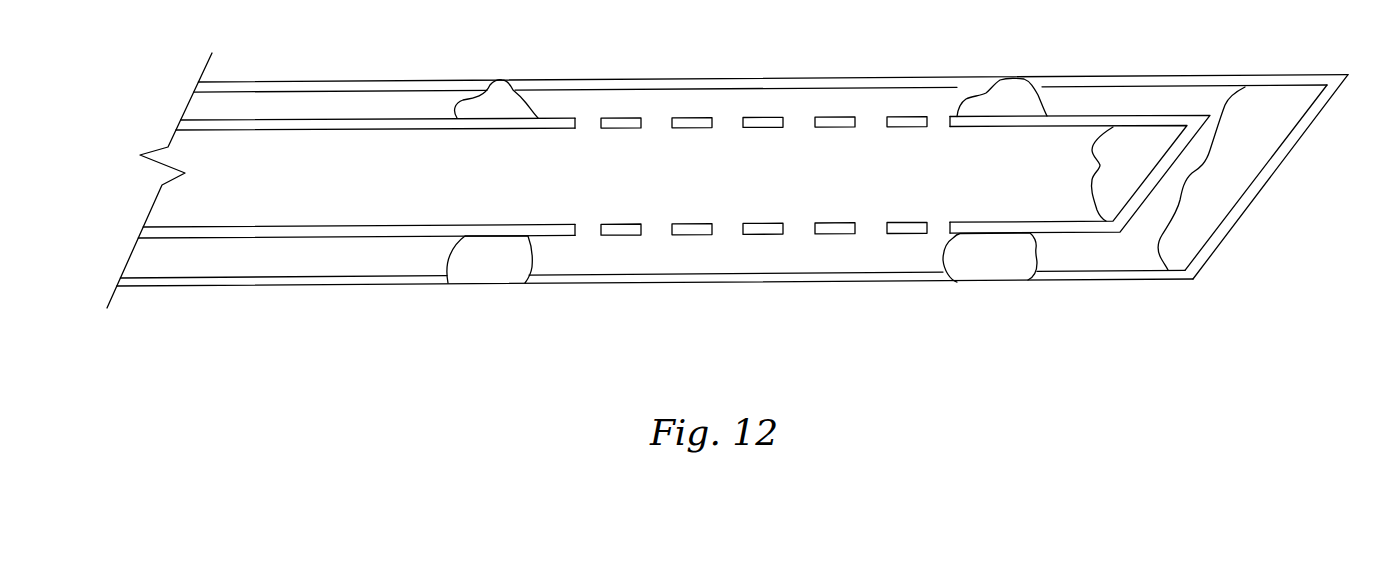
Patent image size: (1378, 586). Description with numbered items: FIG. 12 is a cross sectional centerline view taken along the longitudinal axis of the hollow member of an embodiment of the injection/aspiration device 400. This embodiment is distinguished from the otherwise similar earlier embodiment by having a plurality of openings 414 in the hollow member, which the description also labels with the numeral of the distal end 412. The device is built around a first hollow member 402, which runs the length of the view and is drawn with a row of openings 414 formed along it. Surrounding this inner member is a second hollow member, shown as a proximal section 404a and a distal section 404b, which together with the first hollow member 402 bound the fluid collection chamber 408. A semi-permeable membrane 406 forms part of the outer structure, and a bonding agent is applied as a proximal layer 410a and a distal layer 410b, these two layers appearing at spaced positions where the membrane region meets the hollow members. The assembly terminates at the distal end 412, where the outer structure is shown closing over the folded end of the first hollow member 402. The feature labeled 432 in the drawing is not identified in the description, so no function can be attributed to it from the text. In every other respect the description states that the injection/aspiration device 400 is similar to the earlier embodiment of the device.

The injection/aspiration device 400 is at (630, 340).
The first hollow member 402 is at (1142, 120).
The second hollow member (proximal section) 404a is at (352, 83).
The second hollow member (distal section) 404b is at (1110, 277).
The semi-permeable membrane 406 is at (723, 82).
The fluid collection chamber 408 is at (582, 253).
The bonding agent (proximal layer) 410a is at (503, 84).
The bonding agent (distal layer) 410b is at (1015, 83).
The distal end 412 is at (1252, 192).
The opening 414 is at (658, 117).
The interior cavity 432 is at (247, 192).